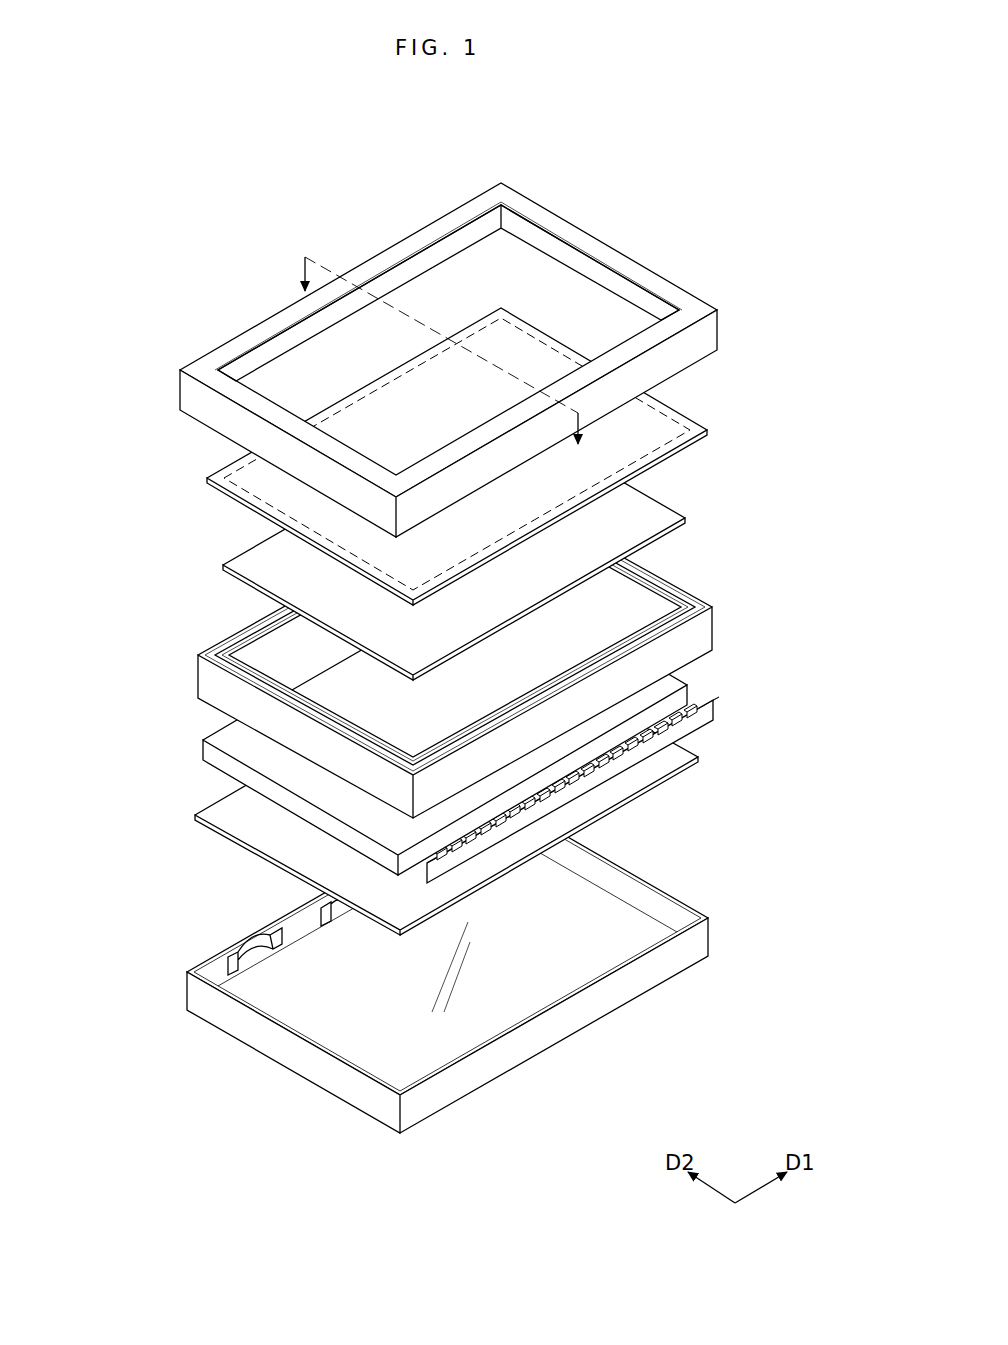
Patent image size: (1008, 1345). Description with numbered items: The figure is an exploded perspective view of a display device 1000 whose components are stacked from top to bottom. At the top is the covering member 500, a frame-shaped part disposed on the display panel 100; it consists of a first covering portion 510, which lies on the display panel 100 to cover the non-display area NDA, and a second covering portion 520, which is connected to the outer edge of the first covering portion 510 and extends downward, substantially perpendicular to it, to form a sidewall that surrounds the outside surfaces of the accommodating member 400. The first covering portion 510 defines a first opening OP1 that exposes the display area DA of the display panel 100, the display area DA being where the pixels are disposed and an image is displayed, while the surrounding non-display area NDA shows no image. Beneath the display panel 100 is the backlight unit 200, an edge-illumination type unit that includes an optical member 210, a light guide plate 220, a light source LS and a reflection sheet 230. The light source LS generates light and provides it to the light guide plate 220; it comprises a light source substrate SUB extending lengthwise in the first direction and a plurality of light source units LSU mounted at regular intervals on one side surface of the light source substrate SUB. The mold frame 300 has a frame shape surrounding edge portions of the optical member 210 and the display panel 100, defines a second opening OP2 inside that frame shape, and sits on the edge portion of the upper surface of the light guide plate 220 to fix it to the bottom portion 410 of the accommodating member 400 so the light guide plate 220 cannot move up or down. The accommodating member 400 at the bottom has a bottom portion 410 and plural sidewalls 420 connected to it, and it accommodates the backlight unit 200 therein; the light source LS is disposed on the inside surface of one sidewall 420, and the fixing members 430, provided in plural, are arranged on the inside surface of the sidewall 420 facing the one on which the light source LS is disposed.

The display device 1000 is at (471, 644).
The covering member 500 is at (388, 346).
The first covering portion 510 is at (213, 357).
The second covering portion 520 is at (185, 396).
The first opening OP1 is at (534, 277).
The display panel 100 is at (403, 456).
The display area DA is at (243, 476).
The non-display area NDA is at (207, 480).
The backlight unit 200 is at (502, 671).
The optical member 210 is at (686, 520).
The light guide plate 220 is at (688, 688).
The light source LS is at (631, 770).
The light source unit LSU is at (614, 770).
The light source substrate SUB is at (708, 712).
The reflection sheet 230 is at (681, 756).
The mold frame 300 is at (416, 652).
The second opening OP2 is at (306, 666).
The accommodating member 400 is at (383, 964).
The bottom portion 410 is at (315, 957).
The sidewall 420 is at (187, 971).
The fixing member 430 is at (220, 971).